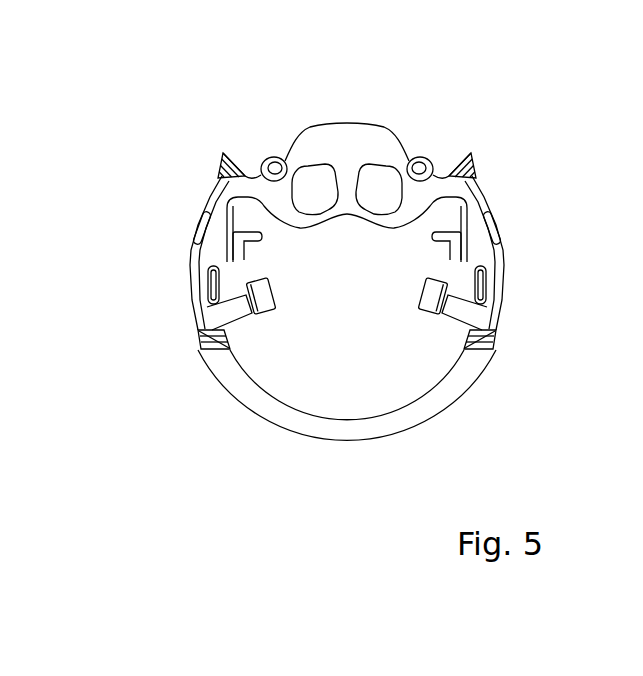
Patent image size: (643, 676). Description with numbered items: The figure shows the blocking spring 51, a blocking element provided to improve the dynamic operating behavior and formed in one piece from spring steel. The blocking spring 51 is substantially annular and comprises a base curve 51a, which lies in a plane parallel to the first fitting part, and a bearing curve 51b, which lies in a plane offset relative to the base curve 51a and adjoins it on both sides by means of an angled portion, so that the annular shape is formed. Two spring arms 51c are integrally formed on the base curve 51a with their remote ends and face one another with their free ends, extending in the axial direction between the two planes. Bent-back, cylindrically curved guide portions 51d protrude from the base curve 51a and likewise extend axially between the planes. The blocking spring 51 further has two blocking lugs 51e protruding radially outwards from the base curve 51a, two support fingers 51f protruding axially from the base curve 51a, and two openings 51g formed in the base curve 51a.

The blocking spring 51 is at (502, 323).
The base curve 51a is at (478, 220).
The bearing curve 51b is at (435, 397).
The spring arms 51c is at (270, 160).
The guide portions 51d is at (210, 290).
The blocking lugs 51e is at (217, 163).
The support fingers 51f is at (248, 241).
The openings 51g is at (313, 178).